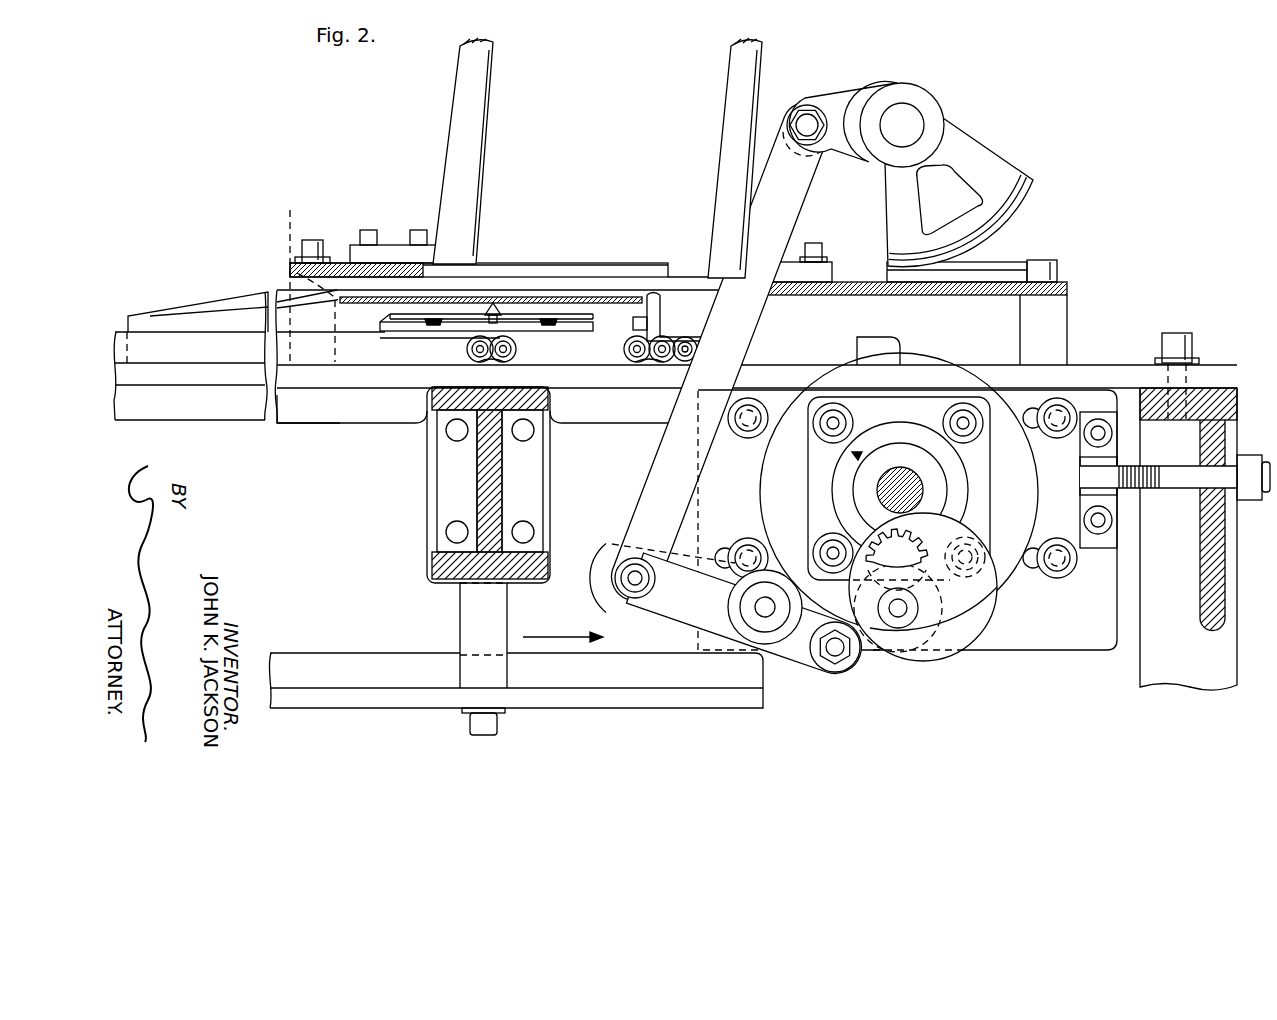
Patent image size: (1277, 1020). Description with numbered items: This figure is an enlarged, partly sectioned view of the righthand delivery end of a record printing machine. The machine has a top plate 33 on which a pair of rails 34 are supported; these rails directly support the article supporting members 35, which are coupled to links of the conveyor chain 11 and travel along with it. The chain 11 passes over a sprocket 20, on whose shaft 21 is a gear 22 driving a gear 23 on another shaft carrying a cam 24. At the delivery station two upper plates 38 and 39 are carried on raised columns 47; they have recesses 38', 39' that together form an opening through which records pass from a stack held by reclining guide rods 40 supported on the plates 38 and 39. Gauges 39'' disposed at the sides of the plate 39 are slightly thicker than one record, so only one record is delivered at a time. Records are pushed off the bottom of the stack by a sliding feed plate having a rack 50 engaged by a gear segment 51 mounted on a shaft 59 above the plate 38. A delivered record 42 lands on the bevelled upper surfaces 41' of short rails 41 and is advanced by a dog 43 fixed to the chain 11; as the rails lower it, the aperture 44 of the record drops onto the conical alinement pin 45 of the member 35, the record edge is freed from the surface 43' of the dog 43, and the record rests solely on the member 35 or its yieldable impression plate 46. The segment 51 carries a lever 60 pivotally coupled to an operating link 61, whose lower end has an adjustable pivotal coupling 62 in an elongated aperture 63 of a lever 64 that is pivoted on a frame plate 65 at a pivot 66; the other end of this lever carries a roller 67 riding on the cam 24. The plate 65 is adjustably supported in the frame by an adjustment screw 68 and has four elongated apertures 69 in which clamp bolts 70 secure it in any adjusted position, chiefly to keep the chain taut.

The chain 11 is at (648, 360).
The sprocket 20 is at (762, 495).
The shaft 21 is at (922, 485).
The gear 22 is at (907, 549).
The gear 23 is at (930, 565).
The cam 24 is at (932, 662).
The top plate 33 is at (298, 410).
The rails 34 is at (116, 332).
The article supporting members 35 is at (410, 335).
The upper plate 38 is at (907, 249).
The recess 38' is at (746, 248).
The upper plate 39 is at (518, 229).
The recess 39' is at (411, 217).
The gauges 39'' is at (545, 234).
The guide rods 40 is at (493, 96).
The rails 41 is at (197, 303).
The upper surfaces 41' is at (209, 272).
The record 42 is at (480, 294).
The dog 43 is at (680, 317).
The surface 43' is at (635, 279).
The aperture 44 is at (496, 300).
The alinement pin 45 is at (512, 312).
The yieldable impression plate 46 is at (388, 320).
The raised columns 47 is at (1092, 272).
The rack 50 is at (988, 252).
The segment 51 is at (978, 145).
The shaft 59 is at (912, 112).
The lever 60 is at (849, 90).
The operating link 61 is at (788, 140).
The adjustable pivotal coupling 62 is at (633, 582).
The elongated aperture 63 is at (604, 583).
The lever 64 is at (800, 656).
The frame plate 65 is at (1042, 652).
The pivot 66 is at (763, 612).
The roller 67 is at (840, 670).
The adjustment screw 68 is at (1155, 480).
The elongated apertures 69 is at (724, 553).
The clamp bolts 70 is at (750, 428).